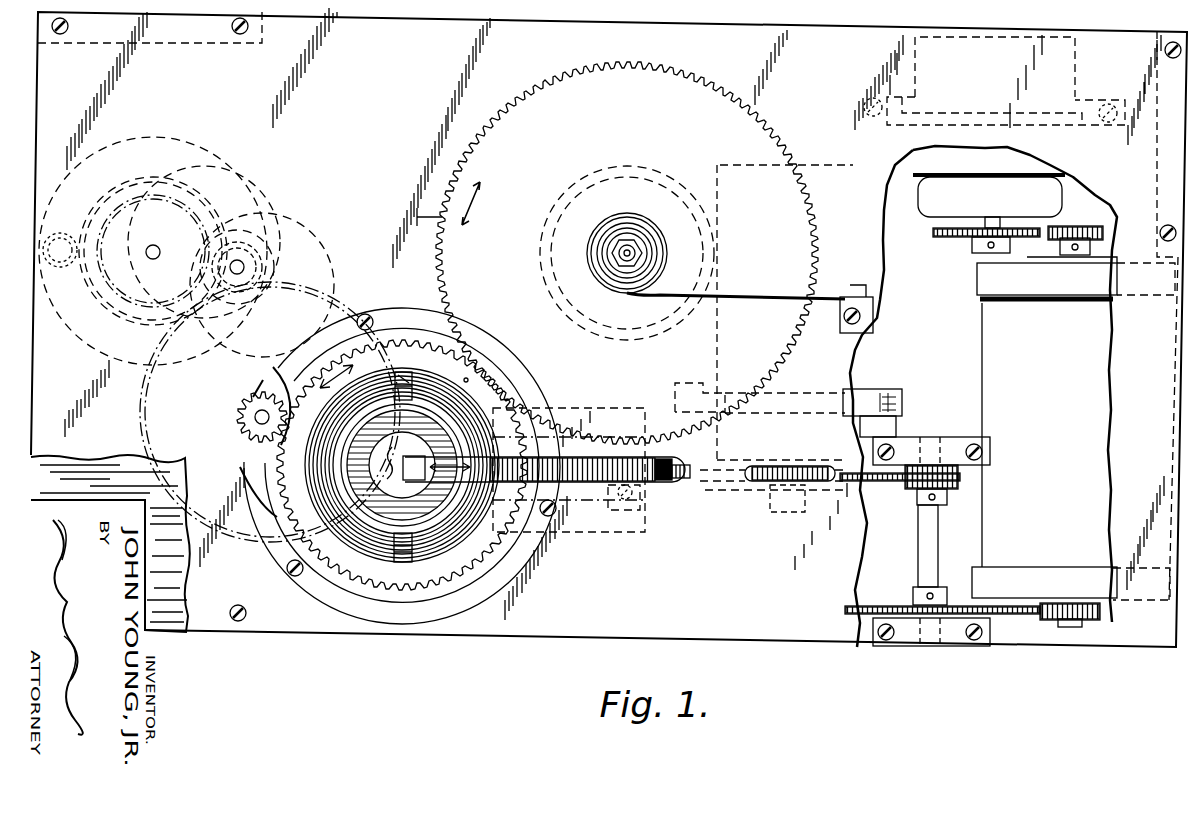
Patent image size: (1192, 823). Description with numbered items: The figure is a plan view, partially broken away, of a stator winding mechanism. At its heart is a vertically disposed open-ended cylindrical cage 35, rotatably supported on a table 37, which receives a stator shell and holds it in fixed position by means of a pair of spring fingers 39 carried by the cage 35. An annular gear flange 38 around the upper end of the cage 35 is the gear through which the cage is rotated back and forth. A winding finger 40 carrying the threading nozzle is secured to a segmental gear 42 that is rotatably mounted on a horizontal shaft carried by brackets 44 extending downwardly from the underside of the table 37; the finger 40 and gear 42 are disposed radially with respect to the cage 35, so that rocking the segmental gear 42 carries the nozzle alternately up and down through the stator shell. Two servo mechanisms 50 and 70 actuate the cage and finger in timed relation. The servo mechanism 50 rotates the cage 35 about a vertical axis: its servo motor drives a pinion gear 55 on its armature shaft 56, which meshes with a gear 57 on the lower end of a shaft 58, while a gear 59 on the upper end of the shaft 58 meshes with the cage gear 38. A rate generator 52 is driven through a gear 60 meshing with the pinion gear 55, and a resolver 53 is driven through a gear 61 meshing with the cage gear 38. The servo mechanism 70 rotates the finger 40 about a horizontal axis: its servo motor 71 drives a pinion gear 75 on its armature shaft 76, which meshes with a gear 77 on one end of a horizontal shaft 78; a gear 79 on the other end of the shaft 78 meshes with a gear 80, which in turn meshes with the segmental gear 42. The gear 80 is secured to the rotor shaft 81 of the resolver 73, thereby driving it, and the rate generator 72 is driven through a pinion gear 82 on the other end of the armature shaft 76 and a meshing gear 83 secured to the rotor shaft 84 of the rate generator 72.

The cylindrical cage 35 is at (372, 548).
The table 37 is at (609, 327).
The annular gear flange 38 is at (508, 566).
The spring fingers 39 is at (405, 372).
The winding finger 40 is at (420, 458).
The segmental gear 42 is at (676, 485).
The brackets 44 is at (632, 408).
The servo mechanism 50 is at (297, 288).
The rate generator 52 is at (195, 172).
The resolver 53 is at (620, 165).
The pinion gear 55 is at (265, 258).
The armature shaft 56 is at (263, 220).
The gear 57 is at (140, 408).
The shaft 58 is at (245, 417).
The gear 59 is at (276, 366).
The gear 60 is at (207, 186).
The gear 61 is at (435, 205).
The servo mechanism 70 is at (964, 384).
The servo motor 71 is at (990, 318).
The rate generator 72 is at (1063, 190).
The resolver 73 is at (720, 163).
The pinion gear 75 is at (1090, 628).
The armature shaft 76 is at (1068, 255).
The gear 77 is at (1015, 620).
The horizontal shaft 78 is at (938, 537).
The gear 79 is at (958, 480).
The gear 80 is at (770, 483).
The rotor shaft 81 is at (800, 512).
The pinion gear 82 is at (1100, 235).
The gear 83 is at (955, 240).
The rotor shaft 84 is at (1002, 224).